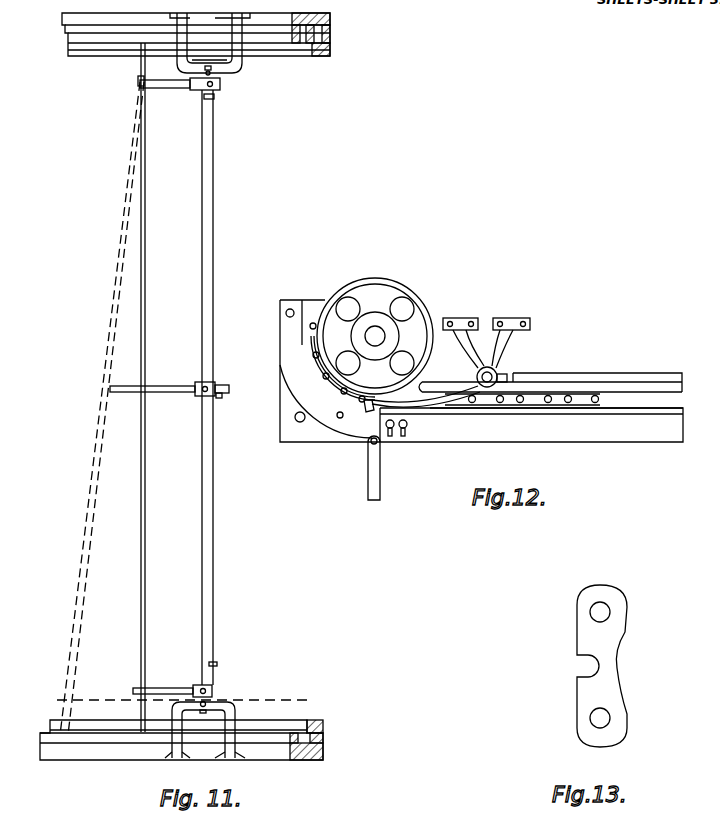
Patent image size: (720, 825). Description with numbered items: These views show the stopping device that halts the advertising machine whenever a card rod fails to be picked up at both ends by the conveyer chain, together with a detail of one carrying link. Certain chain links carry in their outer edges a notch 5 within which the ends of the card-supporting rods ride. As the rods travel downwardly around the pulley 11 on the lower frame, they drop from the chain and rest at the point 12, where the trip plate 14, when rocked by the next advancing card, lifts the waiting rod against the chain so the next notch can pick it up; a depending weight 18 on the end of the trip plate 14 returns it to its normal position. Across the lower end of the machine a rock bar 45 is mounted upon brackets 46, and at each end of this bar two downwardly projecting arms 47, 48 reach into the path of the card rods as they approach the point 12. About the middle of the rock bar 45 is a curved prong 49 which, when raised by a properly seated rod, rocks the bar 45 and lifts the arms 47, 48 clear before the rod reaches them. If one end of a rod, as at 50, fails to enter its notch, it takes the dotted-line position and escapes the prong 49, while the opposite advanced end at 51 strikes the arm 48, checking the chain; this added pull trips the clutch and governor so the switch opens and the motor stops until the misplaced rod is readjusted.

In FIG. 13, the notch 5 is at (586, 666).
In FIG. 12, the pulley 11 is at (383, 296).
In FIG. 11, the point 12 is at (183, 701).
In FIG. 12, the point 12 is at (368, 410).
In FIG. 12, the trip plate 14 is at (531, 425).
In FIG. 12, the depending weight 18 is at (380, 471).
In FIG. 11, the rock bar 45 is at (212, 622).
In FIG. 12, the rock bar 45 is at (498, 374).
In FIG. 11, the brackets 46 is at (233, 712).
In FIG. 12, the brackets 46 is at (505, 348).
In FIG. 11, the downwardly projecting arm 47 is at (165, 690).
In FIG. 11, the downwardly projecting arm 48 is at (186, 90).
In FIG. 11, the curved prong 49 is at (150, 390).
In FIG. 12, the curved prong 49 is at (436, 405).
In FIG. 11, the card rod end 50 is at (146, 457).
In FIG. 11, the card rod end 51 is at (139, 80).